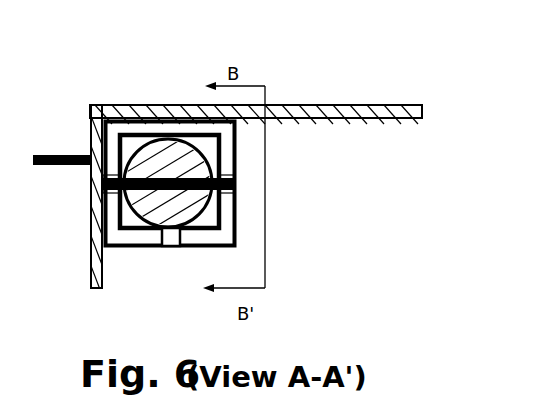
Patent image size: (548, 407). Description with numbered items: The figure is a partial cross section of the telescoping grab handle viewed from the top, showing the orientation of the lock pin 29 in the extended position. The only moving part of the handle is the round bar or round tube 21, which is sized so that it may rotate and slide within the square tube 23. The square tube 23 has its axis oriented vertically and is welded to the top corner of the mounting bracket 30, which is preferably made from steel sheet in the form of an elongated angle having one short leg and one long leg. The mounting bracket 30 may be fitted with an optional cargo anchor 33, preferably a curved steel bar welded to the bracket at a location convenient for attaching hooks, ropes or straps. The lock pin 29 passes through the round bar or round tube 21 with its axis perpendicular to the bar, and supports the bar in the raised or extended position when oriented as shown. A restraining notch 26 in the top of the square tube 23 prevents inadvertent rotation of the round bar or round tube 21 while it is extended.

The round bar or round tube 21 is at (133, 145).
The square tube 23 is at (237, 212).
The restraining notch 26 is at (172, 237).
The lock pin 29 is at (220, 150).
The mounting bracket 30 is at (370, 107).
The cargo anchor 33 is at (53, 153).